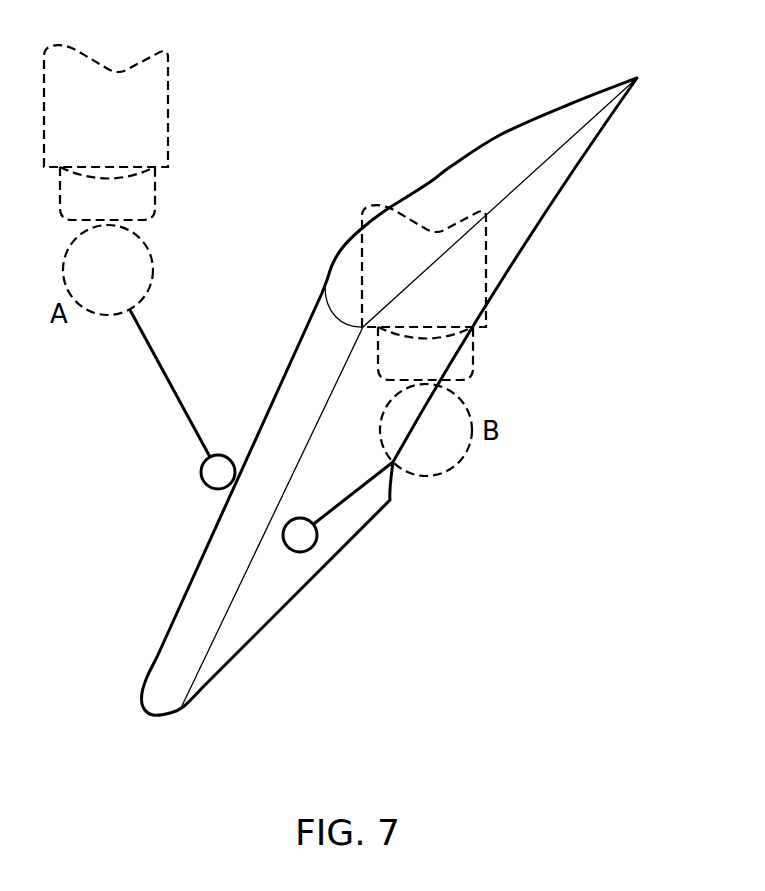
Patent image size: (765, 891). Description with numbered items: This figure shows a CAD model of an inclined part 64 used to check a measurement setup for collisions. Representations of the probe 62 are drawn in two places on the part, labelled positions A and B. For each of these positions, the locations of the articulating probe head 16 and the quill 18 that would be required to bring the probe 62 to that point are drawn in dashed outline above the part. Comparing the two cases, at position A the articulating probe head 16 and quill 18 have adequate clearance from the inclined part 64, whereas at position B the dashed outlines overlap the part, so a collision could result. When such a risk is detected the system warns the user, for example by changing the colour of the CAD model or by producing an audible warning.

The inclined part 64 is at (587, 137).
The quill 18 is at (150, 98).
The articulating probe head 16 is at (163, 238).
The probe 62 is at (170, 380).